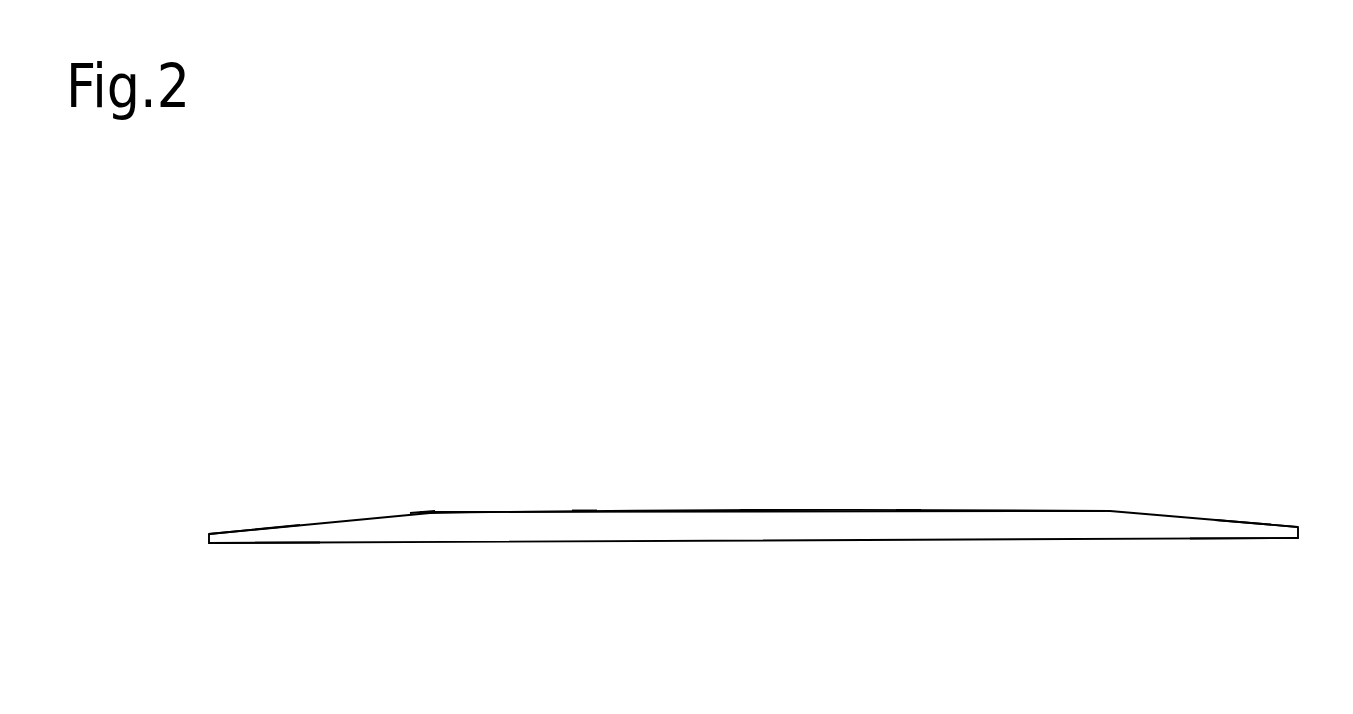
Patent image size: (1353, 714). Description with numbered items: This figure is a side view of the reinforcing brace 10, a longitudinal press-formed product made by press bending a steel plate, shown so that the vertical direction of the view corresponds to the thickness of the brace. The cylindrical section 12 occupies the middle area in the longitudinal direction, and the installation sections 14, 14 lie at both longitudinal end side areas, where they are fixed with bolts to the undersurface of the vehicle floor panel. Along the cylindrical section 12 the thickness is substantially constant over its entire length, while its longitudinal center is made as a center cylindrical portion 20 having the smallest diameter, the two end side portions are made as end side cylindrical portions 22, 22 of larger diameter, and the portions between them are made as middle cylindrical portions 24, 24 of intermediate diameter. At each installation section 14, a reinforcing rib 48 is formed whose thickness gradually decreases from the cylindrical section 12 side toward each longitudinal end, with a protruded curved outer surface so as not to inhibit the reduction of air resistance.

The reinforcing brace 10 is at (357, 433).
The cylindrical section 12 is at (890, 349).
The installation section 14 is at (288, 524).
The center cylindrical portion 20 is at (752, 509).
The end side cylindrical portion 22 is at (422, 509).
The middle cylindrical portion 24 is at (584, 509).
The reinforcing rib 48 is at (302, 537).